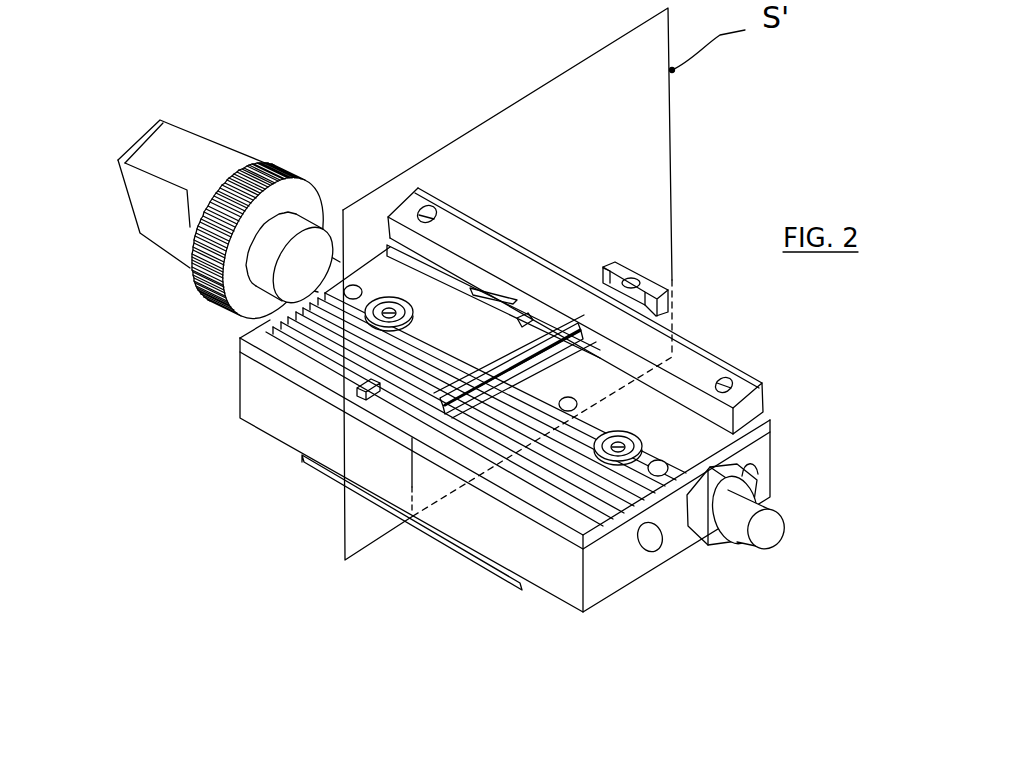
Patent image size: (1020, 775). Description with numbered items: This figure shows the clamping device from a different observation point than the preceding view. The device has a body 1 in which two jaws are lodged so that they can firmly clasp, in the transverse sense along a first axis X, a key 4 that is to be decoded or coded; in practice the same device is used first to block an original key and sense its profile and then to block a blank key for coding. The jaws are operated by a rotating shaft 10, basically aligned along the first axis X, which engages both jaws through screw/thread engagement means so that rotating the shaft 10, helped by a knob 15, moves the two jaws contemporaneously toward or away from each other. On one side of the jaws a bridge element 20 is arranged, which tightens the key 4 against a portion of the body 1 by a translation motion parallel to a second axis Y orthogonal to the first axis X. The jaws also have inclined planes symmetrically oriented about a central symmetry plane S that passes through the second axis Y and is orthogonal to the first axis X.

The body 1 is at (612, 568).
The key 4 is at (668, 290).
The rotating shaft 10 is at (313, 272).
The knob 15 is at (183, 153).
The bridge element 20 is at (700, 360).